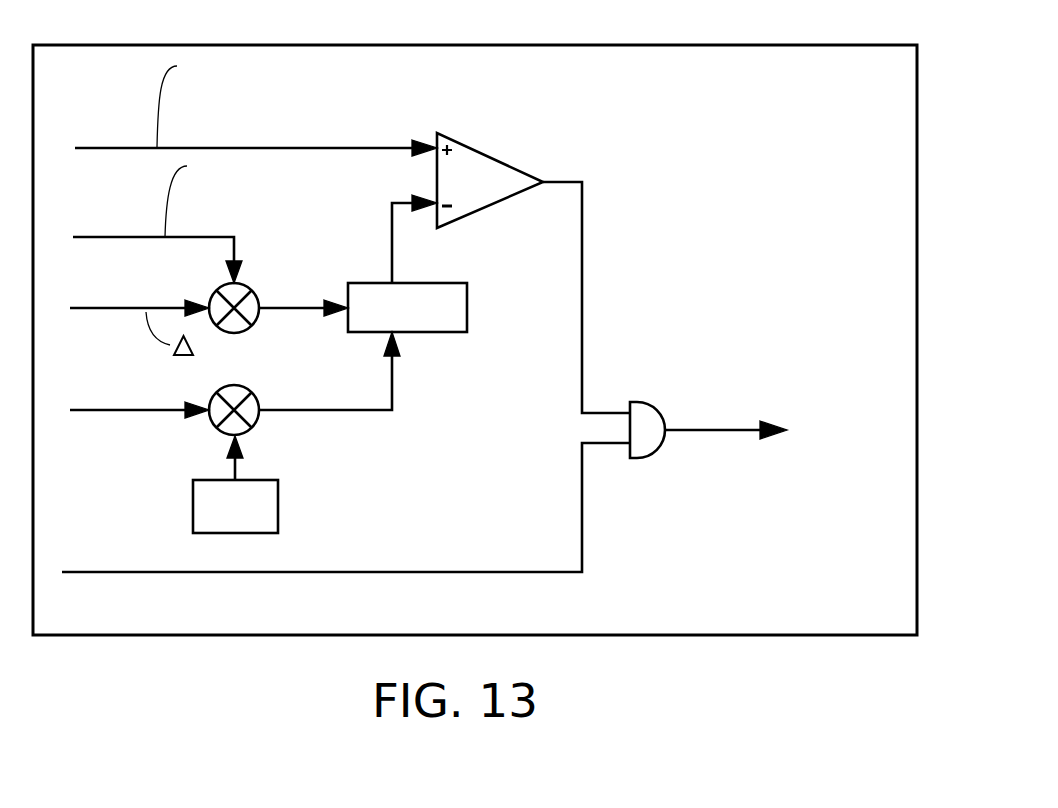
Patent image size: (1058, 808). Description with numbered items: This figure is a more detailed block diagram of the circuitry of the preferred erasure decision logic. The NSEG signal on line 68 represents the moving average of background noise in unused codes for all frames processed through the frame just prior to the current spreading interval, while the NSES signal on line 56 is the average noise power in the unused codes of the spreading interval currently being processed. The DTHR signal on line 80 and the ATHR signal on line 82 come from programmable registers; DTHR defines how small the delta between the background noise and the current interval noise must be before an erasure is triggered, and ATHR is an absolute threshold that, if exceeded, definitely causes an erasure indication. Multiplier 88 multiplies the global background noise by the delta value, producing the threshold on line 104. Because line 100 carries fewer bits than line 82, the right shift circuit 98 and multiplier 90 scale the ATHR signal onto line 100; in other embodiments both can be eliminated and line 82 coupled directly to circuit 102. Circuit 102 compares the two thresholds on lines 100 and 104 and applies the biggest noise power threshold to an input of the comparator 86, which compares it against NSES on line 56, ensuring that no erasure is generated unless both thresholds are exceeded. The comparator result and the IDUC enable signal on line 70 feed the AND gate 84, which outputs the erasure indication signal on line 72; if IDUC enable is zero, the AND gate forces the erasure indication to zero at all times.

The NSES signal line 56 is at (167, 150).
The NSEG signal line 68 is at (135, 240).
The IDUC enable signal line 70 is at (140, 573).
The erasure indication signal line 72 is at (712, 432).
The DTHR signal line 80 is at (128, 312).
The ATHR signal line 82 is at (124, 413).
The AND gate 84 is at (645, 457).
The comparator 86 is at (493, 206).
The multiplier 88 is at (260, 326).
The multiplier 90 is at (257, 384).
The right shift circuit 98 is at (263, 480).
The scaled ATHR threshold line 100 is at (353, 413).
The threshold comparison circuit 102 is at (452, 283).
The scaled DTHR threshold line 104 is at (286, 302).